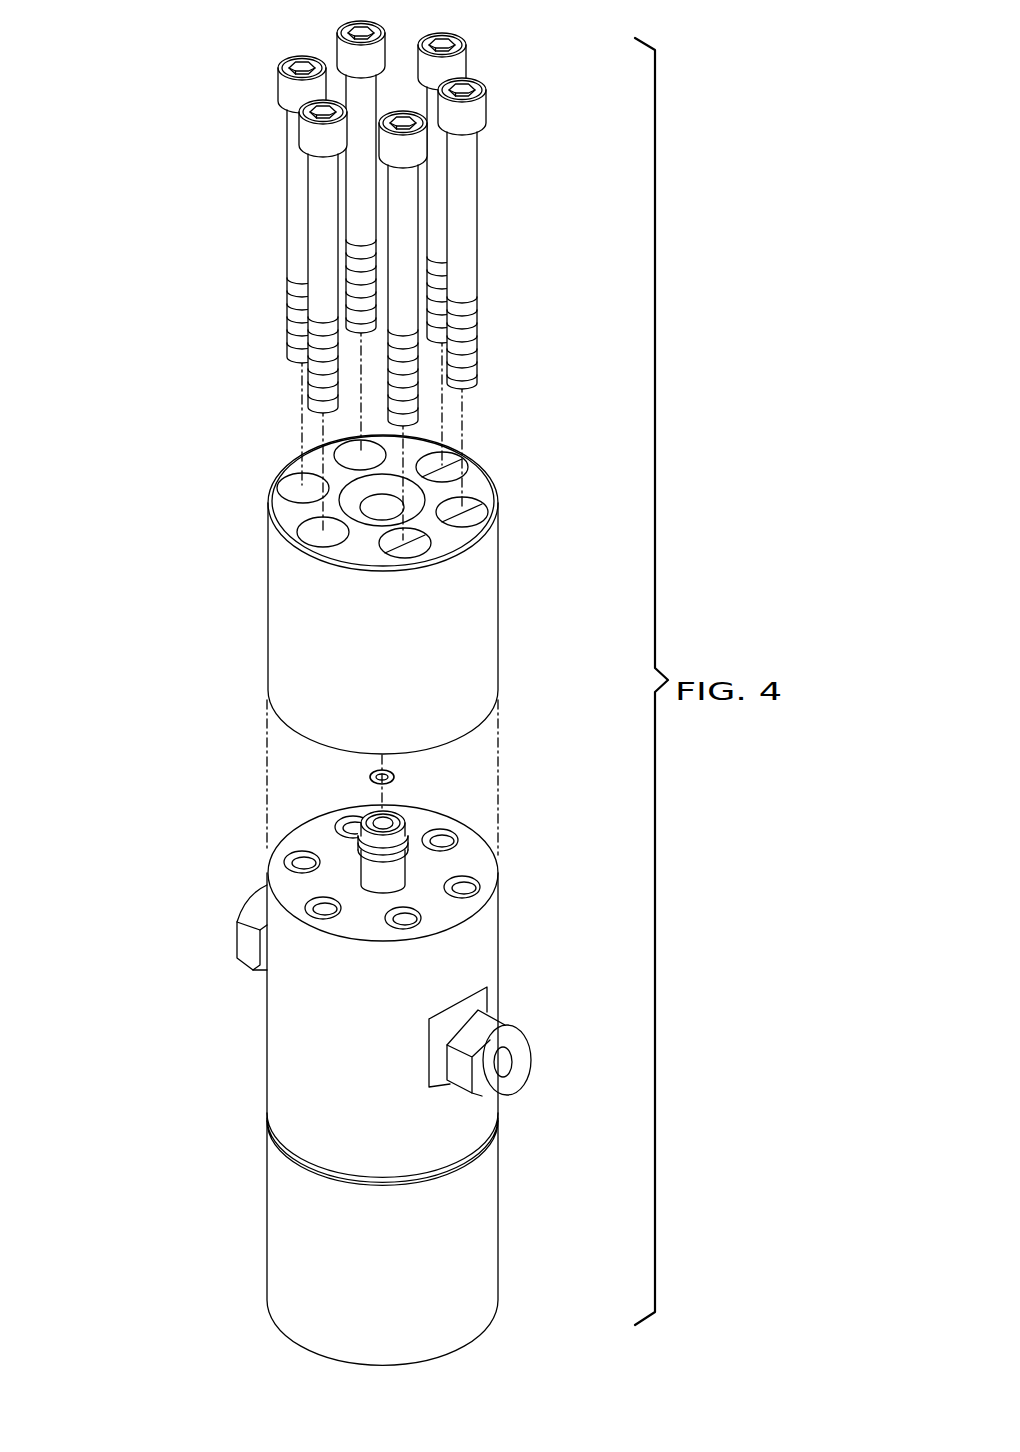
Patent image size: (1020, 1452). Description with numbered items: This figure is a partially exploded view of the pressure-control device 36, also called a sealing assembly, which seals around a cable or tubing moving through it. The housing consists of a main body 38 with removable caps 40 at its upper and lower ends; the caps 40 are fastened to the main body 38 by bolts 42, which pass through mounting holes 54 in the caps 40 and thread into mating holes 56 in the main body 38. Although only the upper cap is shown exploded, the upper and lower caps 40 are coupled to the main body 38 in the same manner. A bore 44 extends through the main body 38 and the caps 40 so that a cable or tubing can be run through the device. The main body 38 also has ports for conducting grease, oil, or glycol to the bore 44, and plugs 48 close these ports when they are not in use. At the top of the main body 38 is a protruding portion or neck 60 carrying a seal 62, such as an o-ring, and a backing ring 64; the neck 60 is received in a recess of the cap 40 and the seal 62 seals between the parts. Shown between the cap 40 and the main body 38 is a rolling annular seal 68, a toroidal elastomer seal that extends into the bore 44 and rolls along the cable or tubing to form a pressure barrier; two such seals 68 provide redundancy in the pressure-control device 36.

The pressure-control device 36 is at (131, 159).
The main body 38 is at (280, 1073).
The caps 40 is at (278, 632).
The bolts 42 is at (300, 55).
The bore 44 is at (372, 520).
The plugs 48 is at (240, 933).
The mounting holes 54 is at (342, 457).
The mating holes 56 is at (450, 840).
The necks 60 is at (381, 833).
The seals 62 is at (412, 815).
The backing rings 64 is at (410, 848).
The rolling annular seal 68 is at (395, 770).